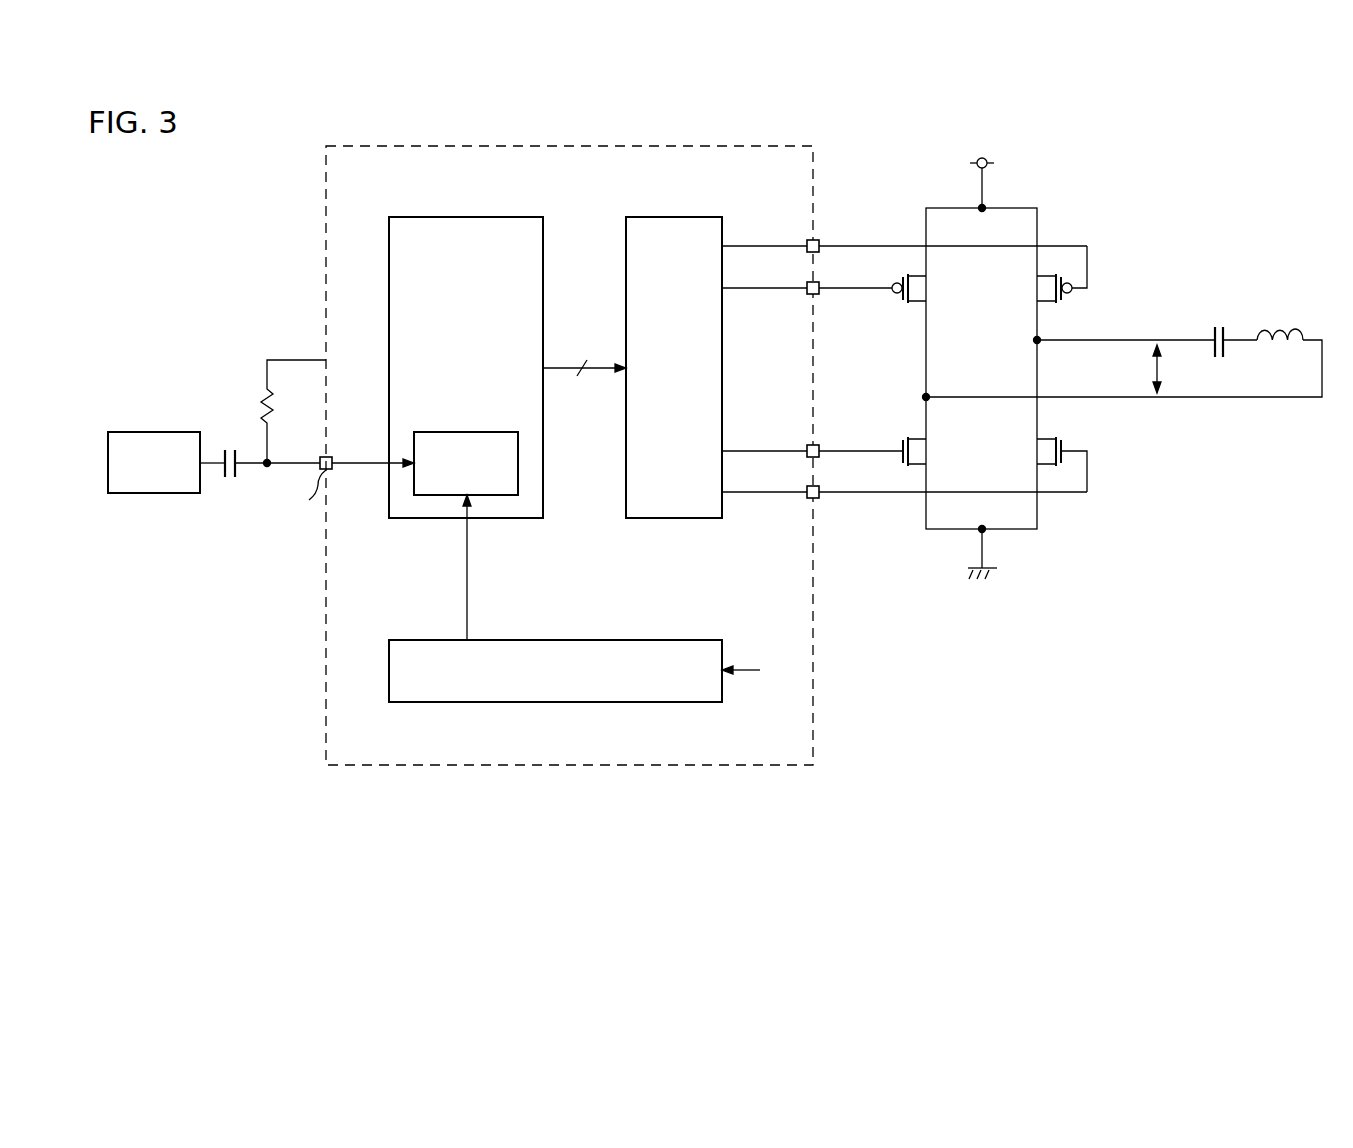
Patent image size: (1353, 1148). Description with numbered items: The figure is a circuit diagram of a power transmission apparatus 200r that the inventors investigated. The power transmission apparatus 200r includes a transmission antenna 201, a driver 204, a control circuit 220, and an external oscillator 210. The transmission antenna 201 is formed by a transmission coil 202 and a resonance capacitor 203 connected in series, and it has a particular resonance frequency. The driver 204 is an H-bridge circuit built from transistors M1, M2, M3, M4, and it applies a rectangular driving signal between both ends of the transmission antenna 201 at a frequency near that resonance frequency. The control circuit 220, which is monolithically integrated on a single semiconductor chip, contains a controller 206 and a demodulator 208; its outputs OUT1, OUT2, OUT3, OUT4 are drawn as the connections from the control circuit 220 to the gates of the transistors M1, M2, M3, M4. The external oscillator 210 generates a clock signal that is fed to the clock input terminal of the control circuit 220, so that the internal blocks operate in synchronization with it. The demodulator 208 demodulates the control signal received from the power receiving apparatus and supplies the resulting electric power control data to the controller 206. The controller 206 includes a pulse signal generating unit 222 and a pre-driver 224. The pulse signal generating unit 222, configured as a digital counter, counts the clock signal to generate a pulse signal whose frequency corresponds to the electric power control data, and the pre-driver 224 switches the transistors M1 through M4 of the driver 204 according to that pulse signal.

The power transmission apparatus 200r is at (686, 899).
The transmission antenna 201 is at (1124, 364).
The transmission coil 202 is at (1283, 326).
The resonance capacitor 203 is at (1220, 318).
The driver 204 is at (982, 398).
The controller 206 is at (555, 373).
The demodulator 208 is at (567, 702).
The external oscillator 210 is at (150, 493).
The control circuit 220 is at (470, 765).
The pulse signal generating unit 222 is at (475, 217).
The pre-driver 224 is at (665, 217).
The transistor M1 is at (933, 288).
The transistor M2 is at (1033, 292).
The transistor M3 is at (933, 443).
The transistor M4 is at (1033, 447).
The output terminal OUT1 is at (820, 294).
The output terminal OUT2 is at (820, 240).
The output terminal OUT3 is at (820, 445).
The output terminal OUT4 is at (820, 498).